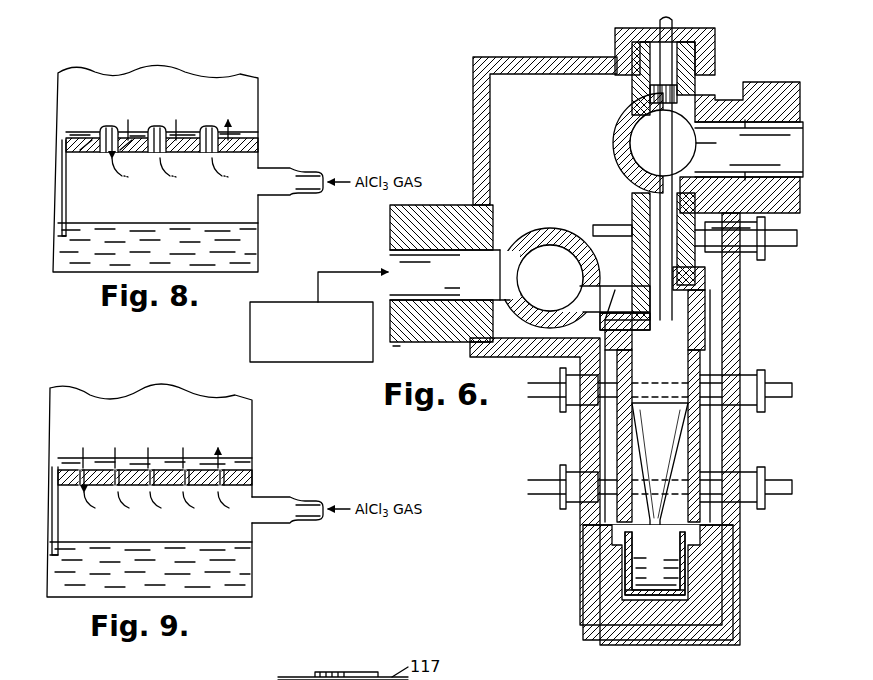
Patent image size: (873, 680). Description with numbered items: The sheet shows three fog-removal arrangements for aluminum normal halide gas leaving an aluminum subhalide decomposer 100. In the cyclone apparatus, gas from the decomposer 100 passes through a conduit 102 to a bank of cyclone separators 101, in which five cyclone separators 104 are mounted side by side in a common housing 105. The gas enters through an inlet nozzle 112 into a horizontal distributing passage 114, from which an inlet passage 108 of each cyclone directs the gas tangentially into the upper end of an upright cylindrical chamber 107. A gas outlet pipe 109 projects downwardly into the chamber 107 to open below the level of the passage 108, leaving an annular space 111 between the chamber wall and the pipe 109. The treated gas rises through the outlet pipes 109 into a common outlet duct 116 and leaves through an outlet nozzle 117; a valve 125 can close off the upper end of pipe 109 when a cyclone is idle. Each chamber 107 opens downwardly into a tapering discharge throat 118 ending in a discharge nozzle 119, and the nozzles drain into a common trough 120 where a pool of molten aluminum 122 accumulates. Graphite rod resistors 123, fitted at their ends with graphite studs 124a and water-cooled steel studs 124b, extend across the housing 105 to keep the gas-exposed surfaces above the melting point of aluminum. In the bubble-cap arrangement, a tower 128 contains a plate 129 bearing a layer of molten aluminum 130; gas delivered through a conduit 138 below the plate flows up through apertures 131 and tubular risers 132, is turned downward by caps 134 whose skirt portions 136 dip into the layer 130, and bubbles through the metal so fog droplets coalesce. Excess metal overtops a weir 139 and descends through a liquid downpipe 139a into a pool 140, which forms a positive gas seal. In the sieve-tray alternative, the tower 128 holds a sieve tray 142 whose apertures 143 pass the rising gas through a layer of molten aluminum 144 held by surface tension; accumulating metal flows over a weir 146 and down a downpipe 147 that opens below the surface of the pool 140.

In FIG. 6, the aluminum subhalide decomposer 100 is at (303, 302).
In FIG. 6, the bank of cyclone separators 101 is at (548, 52).
In FIG. 6, the conduit 102 is at (372, 270).
In FIG. 6, the cyclone separator 104 is at (705, 280).
In FIG. 6, the common housing 105 is at (473, 134).
In FIG. 6, the upright cylindrical chamber 107 is at (700, 357).
In FIG. 6, the inlet passage 108 is at (615, 308).
In FIG. 6, the gas outlet pipe 109 is at (632, 210).
In FIG. 6, the annular space 111 is at (690, 309).
In FIG. 6, the inlet nozzle 112 is at (455, 273).
In FIG. 6, the distributing passage 114 is at (560, 278).
In FIG. 6, the common outlet duct 116 is at (630, 146).
In FIG. 6, the outlet nozzle 117 is at (741, 147).
In FIG. 6, the discharge throat 118 is at (690, 440).
In FIG. 6, the discharge nozzle 119 is at (665, 540).
In FIG. 6, the common trough 120 is at (685, 575).
In FIG. 6, the pool of molten aluminum 122 is at (680, 590).
In FIG. 6, the graphite rod resistor 123 is at (606, 225).
In FIG. 6, the graphite stud 124a is at (600, 410).
In FIG. 6, the water-cooled steel stud 124b is at (540, 480).
In FIG. 6, the valve 125 is at (655, 130).
In FIG. 8, the tower 128 is at (58, 100).
In FIG. 8, the plate 129 is at (178, 160).
In FIG. 8, the layer of molten aluminum 130 is at (188, 135).
In FIG. 8, the aperture 131 is at (108, 160).
In FIG. 8, the tubular riser 132 is at (104, 128).
In FIG. 8, the cap 134 is at (118, 134).
In FIG. 8, the skirt portion 136 is at (66, 135).
In FIG. 8, the conduit 138 is at (296, 172).
In FIG. 9, the conduit 138 is at (296, 500).
In FIG. 8, the weir 139 is at (62, 142).
In FIG. 8, the liquid downpipe 139a is at (62, 208).
In FIG. 8, the pool 140 is at (245, 240).
In FIG. 9, the pool 140 is at (240, 580).
In FIG. 9, the sieve tray 142 is at (240, 470).
In FIG. 9, the aperture 143 is at (140, 466).
In FIG. 9, the layer of molten aluminum 144 is at (200, 466).
In FIG. 9, the weir 146 is at (58, 470).
In FIG. 9, the downpipe 147 is at (52, 512).